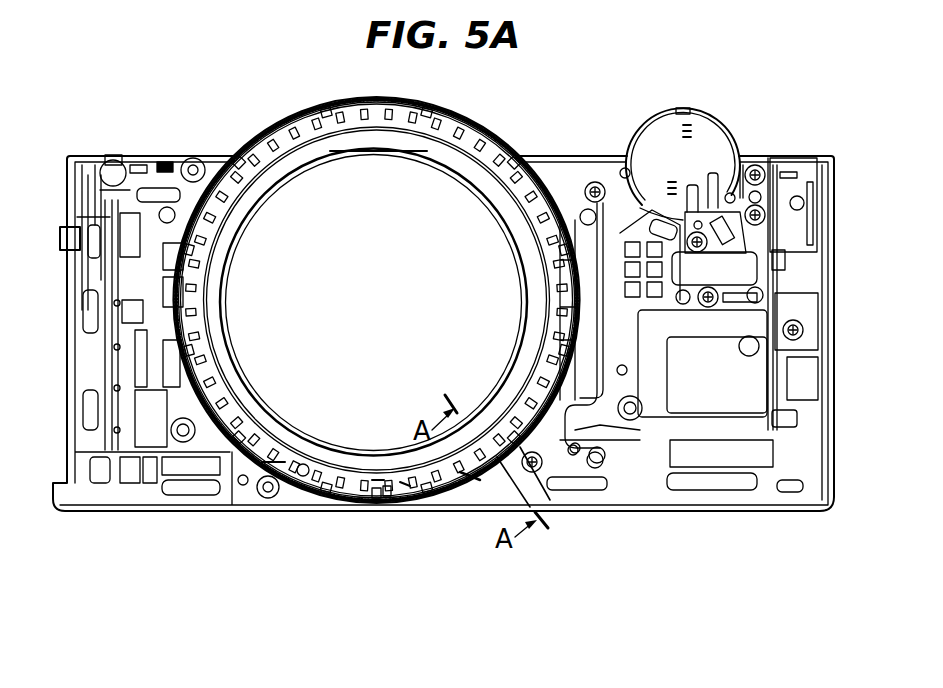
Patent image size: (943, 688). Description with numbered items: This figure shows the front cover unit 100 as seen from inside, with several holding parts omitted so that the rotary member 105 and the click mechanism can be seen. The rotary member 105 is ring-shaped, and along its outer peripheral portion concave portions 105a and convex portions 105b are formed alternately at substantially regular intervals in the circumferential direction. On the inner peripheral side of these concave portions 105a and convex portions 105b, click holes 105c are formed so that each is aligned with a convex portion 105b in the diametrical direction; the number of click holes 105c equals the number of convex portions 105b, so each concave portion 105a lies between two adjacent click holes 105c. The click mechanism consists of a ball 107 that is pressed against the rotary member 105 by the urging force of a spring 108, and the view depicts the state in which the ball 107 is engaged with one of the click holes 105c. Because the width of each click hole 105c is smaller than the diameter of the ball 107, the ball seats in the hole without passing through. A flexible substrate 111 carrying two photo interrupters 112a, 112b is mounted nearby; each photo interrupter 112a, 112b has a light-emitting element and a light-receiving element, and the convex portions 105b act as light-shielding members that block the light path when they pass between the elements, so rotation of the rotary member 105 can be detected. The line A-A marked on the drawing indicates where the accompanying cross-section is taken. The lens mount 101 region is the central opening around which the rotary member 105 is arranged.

The front cover unit 100 is at (208, 136).
The lens mount 101 is at (292, 442).
The rotary member 105 is at (362, 495).
The concave portions 105a is at (387, 495).
The convex portions 105b is at (378, 498).
The click holes 105c is at (405, 486).
The ball 107 is at (273, 467).
The spring 108 is at (303, 473).
The flexible substrate 111 is at (583, 433).
The photo interrupter 112a is at (470, 477).
The photo interrupter 112b is at (548, 455).